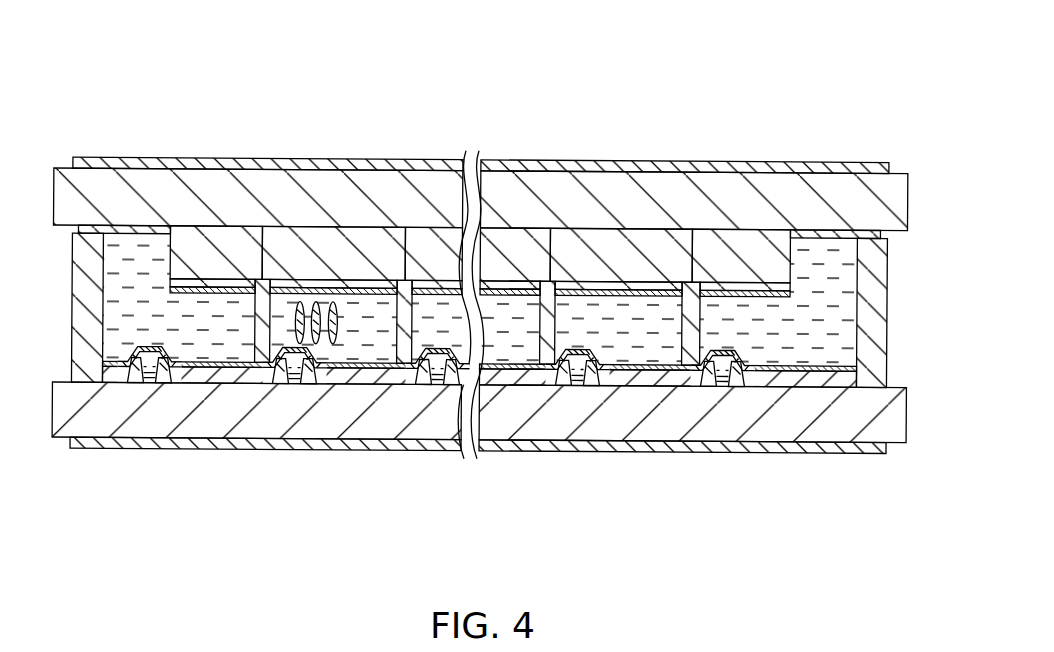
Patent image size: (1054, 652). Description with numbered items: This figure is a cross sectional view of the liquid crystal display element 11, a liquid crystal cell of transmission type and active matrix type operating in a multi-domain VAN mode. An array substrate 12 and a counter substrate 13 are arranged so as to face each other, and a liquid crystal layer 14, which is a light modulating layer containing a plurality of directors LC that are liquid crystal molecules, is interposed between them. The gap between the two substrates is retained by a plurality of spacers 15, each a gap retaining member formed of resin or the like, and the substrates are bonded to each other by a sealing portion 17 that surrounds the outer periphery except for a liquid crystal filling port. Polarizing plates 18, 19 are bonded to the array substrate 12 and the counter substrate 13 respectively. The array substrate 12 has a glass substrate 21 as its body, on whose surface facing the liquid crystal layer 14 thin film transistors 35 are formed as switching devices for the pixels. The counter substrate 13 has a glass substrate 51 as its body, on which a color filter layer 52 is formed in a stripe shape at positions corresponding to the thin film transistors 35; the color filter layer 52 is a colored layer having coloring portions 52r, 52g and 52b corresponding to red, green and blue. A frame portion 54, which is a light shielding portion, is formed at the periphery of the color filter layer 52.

The liquid crystal display element 11 is at (643, 76).
The array substrate 12 is at (808, 452).
The counter substrate 13 is at (807, 170).
The liquid crystal layer 14 is at (817, 310).
The spacer 15 is at (267, 278).
The sealing portion 17 is at (82, 309).
The polarizing plate 18 is at (93, 441).
The polarizing plate 19 is at (95, 164).
The glass substrate 21 is at (768, 440).
The thin film transistor 35 is at (294, 388).
The glass substrate 51 is at (377, 192).
The color filter layer 52 is at (186, 223).
The coloring portion 52b is at (232, 233).
The coloring portion 52r is at (337, 232).
The coloring portion 52g is at (453, 230).
The frame portion 54 is at (130, 229).
The director LC is at (334, 341).